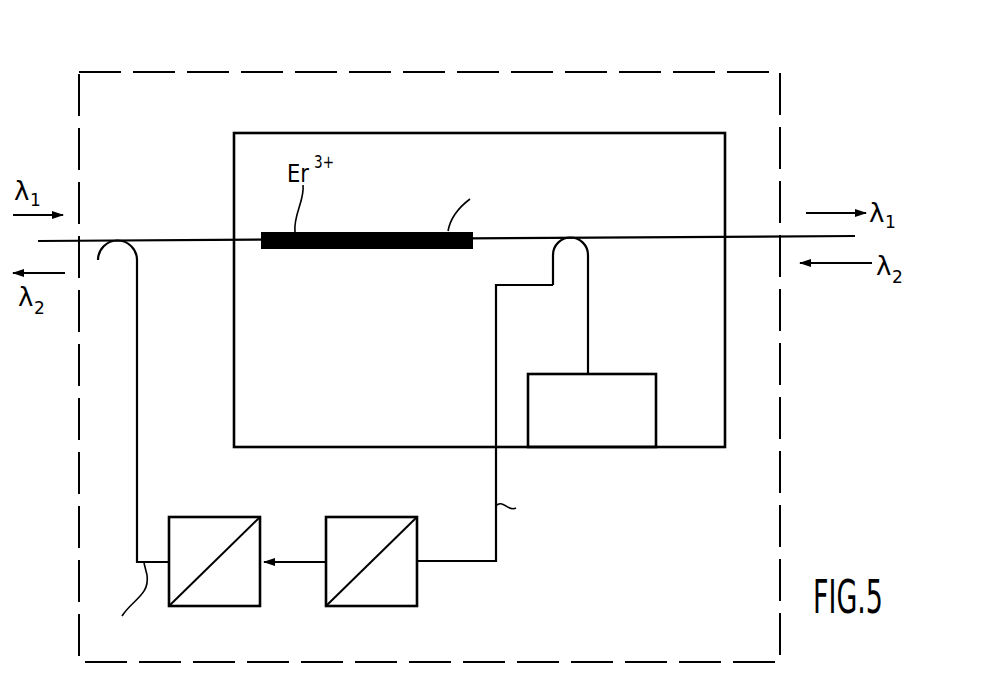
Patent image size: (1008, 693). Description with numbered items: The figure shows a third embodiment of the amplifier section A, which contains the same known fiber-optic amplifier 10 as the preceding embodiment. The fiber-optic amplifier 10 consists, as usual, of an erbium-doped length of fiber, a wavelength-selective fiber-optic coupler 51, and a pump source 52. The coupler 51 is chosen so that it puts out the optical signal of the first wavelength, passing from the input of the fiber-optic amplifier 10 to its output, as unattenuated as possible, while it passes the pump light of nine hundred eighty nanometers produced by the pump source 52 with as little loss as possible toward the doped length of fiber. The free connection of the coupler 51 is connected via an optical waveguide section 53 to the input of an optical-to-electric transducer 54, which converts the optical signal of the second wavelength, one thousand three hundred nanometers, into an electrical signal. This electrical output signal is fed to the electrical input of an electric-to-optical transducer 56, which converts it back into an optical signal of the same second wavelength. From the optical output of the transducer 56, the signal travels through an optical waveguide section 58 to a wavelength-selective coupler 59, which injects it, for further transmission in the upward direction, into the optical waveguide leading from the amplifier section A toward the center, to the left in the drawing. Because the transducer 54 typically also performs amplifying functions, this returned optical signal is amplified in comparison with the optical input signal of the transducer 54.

The amplifier section A is at (528, 70).
The fiber-optic amplifier 10 is at (726, 150).
The wavelength-selective fiber-optic coupler 51 is at (572, 236).
The pump source 52 is at (657, 400).
The optical waveguide section 53 is at (495, 339).
The optical-to-electric transducer 54 is at (375, 516).
The electric-to-optical transducer 56 is at (221, 516).
The optical waveguide section 58 is at (138, 390).
The wavelength-selective coupler 59 is at (118, 240).